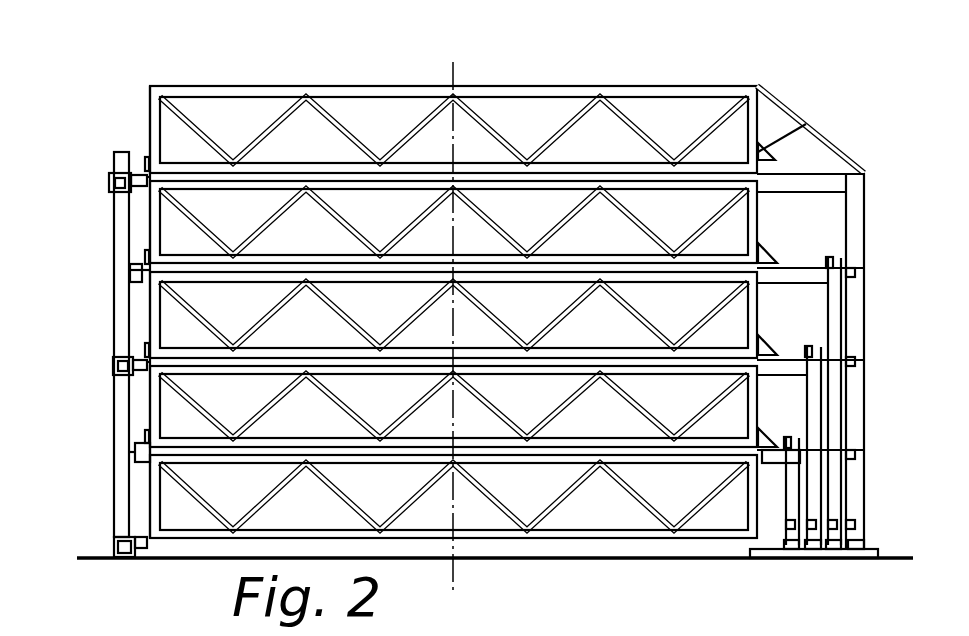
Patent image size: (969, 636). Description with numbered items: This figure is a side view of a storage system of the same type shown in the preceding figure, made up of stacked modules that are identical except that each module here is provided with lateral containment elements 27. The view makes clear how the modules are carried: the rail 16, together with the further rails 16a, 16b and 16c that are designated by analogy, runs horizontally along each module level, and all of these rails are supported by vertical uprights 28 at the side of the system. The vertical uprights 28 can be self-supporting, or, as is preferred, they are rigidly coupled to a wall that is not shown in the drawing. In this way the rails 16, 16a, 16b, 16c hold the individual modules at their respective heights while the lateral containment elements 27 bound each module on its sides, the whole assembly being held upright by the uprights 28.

The vertical uprights 28 is at (122, 151).
The rail 16 is at (136, 193).
The rail 16a is at (140, 283).
The rail 16b is at (140, 376).
The rail 16c is at (142, 463).
The lateral containment elements 27 is at (423, 107).